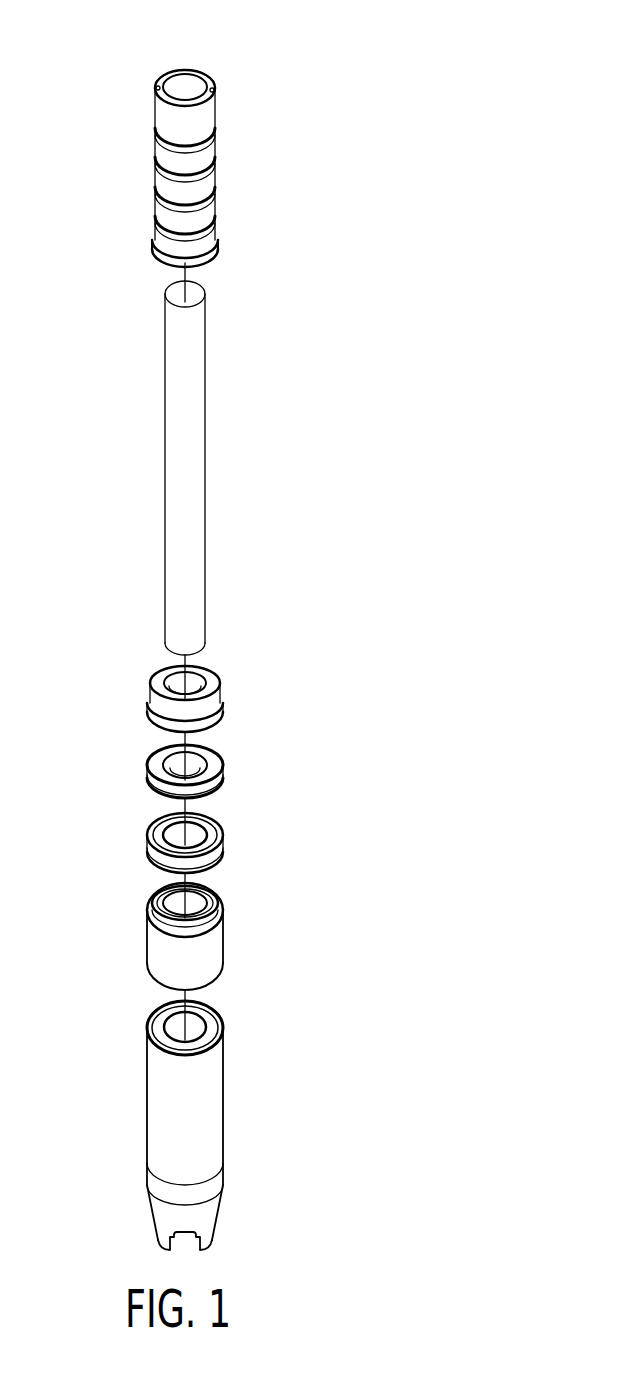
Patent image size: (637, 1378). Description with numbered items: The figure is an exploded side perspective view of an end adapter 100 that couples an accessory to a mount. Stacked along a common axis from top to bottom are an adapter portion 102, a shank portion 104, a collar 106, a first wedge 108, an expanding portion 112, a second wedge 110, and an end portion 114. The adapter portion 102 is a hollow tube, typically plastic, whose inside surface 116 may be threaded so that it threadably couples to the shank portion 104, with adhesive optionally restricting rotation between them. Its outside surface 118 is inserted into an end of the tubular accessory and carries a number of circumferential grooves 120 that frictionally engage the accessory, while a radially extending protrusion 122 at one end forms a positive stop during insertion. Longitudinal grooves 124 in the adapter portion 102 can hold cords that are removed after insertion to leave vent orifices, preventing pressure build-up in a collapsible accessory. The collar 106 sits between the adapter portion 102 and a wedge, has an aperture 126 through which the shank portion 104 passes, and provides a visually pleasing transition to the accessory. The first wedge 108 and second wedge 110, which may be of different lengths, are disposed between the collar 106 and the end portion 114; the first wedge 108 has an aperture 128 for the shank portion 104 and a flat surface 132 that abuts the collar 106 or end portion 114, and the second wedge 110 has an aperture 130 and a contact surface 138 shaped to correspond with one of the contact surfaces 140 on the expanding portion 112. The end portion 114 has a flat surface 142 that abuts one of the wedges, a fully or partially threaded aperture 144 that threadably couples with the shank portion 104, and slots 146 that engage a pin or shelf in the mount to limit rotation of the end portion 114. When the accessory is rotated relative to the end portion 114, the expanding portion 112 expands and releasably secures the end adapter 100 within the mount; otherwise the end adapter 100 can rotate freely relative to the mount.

The end adapter 100 is at (417, 128).
The adapter portion 102 is at (181, 68).
The shank portion 104 is at (205, 372).
The collar 106 is at (150, 695).
The first wedge 108 is at (147, 778).
The second wedge 110 is at (147, 957).
The expanding portion 112 is at (148, 850).
The end portion 114 is at (147, 1145).
The inside surface 116 is at (185, 90).
The outside surface 118 is at (202, 110).
The circumferential grooves 120 is at (185, 190).
The radially extending protrusion 122 is at (212, 258).
The longitudinal grooves 124 is at (212, 90).
The aperture 126 is at (195, 683).
The aperture 128 is at (193, 762).
The aperture 130 is at (205, 900).
The flat surface 132 is at (175, 750).
The contact surface 138 is at (210, 930).
The contact surfaces 140 is at (215, 832).
The flat surface 142 is at (205, 1018).
The aperture 144 is at (170, 1032).
The slots 146 is at (197, 1242).